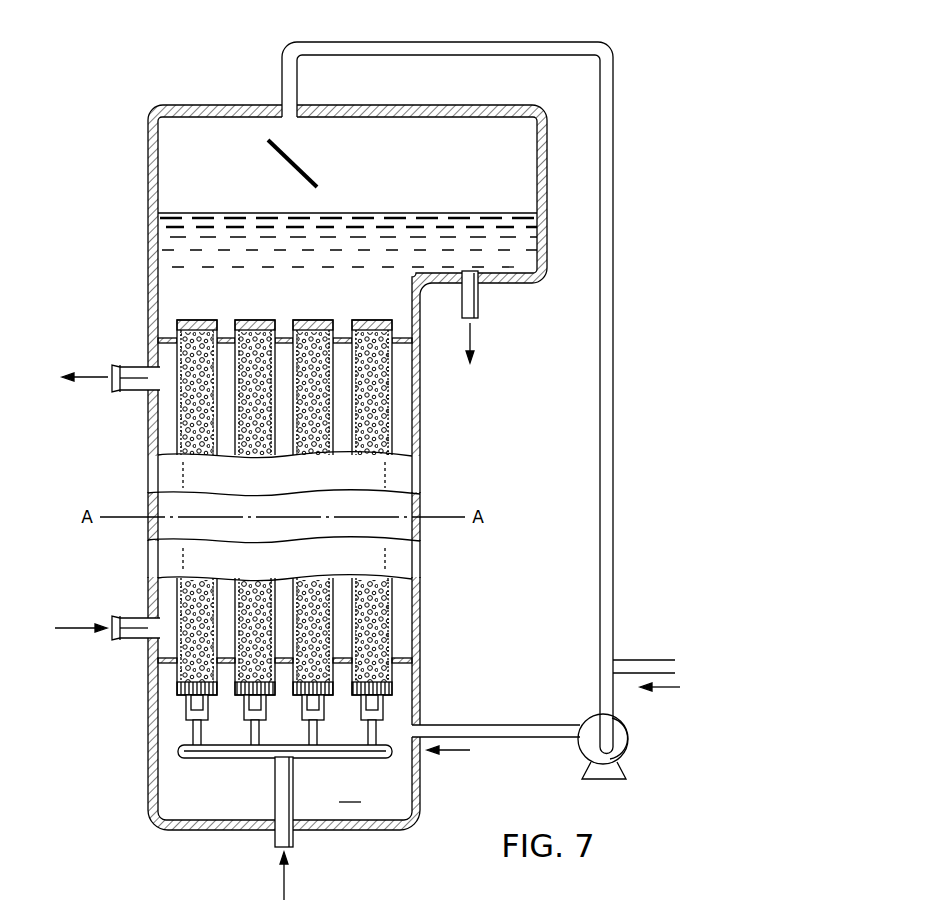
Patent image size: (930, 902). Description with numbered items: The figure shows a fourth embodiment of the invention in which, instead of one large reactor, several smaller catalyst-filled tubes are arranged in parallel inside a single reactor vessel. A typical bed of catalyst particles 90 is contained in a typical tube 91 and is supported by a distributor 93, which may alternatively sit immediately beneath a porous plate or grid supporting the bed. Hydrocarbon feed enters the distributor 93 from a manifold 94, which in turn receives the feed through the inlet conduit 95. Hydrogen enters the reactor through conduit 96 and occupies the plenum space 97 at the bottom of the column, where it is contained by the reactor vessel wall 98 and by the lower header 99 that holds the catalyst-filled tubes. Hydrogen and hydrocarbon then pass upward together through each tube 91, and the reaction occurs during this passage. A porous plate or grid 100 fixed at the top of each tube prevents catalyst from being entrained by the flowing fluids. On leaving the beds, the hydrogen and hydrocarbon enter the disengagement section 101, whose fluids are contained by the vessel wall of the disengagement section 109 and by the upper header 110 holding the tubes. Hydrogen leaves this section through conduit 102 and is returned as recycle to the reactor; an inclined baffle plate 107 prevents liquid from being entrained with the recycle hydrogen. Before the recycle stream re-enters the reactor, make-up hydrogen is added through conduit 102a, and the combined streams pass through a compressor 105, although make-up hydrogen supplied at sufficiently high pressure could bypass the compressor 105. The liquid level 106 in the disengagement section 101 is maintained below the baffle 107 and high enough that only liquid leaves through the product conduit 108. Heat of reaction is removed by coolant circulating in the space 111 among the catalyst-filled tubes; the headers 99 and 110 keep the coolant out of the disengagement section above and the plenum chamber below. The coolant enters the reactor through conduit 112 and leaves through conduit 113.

The bed of catalyst particles 90 is at (154, 399).
The tube 91 is at (178, 447).
The distributor 93 is at (177, 687).
The manifold 94 is at (207, 757).
The inlet conduit 95 is at (290, 836).
The conduit 96 is at (498, 740).
The plenum space 97 is at (350, 794).
The reactor vessel wall 98 is at (420, 708).
The header 99 is at (412, 660).
The porous plate or grid 100 is at (255, 323).
The disengagement section 101 is at (173, 160).
The conduit 102 is at (299, 24).
The conduit 102a is at (650, 658).
The compressor 105 is at (627, 753).
The liquid level 106 is at (415, 213).
The inclined baffle plate 107 is at (310, 175).
The product conduit 108 is at (480, 310).
The vessel wall of the disengagement section 109 is at (147, 227).
The header 110 is at (163, 336).
The space 111 is at (343, 433).
The conduit 112 is at (130, 618).
The conduit 113 is at (133, 367).